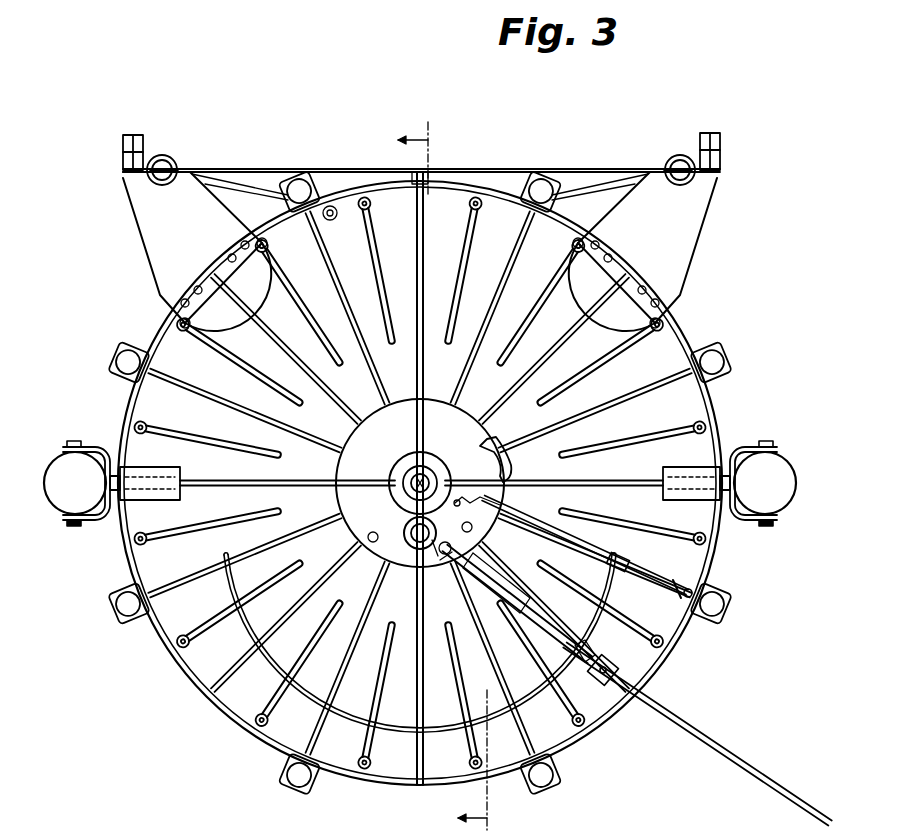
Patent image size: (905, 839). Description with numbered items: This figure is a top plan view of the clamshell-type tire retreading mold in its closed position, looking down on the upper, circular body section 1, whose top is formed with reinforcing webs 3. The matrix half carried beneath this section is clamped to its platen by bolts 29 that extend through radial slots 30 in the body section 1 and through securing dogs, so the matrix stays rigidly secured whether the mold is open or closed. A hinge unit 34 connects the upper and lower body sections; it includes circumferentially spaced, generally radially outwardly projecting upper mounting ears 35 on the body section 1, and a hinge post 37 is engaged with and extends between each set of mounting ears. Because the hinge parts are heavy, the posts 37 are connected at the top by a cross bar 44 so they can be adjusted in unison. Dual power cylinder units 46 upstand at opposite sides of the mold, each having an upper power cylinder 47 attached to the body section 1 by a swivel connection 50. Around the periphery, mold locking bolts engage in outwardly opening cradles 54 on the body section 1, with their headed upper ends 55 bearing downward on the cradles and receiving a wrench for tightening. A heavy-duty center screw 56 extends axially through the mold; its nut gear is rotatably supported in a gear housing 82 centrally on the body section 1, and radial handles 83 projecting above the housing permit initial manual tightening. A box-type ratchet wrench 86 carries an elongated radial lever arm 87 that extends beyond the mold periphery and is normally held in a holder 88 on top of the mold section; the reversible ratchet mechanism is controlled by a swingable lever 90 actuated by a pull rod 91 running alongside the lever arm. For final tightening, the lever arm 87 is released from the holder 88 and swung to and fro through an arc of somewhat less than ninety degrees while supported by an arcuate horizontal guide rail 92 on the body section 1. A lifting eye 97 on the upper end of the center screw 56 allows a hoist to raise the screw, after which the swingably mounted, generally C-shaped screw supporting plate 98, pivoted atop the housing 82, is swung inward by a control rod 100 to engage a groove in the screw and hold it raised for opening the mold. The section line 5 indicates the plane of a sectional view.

The upper circular body section 1 is at (716, 412).
The reinforcing webs 3 is at (315, 440).
The section line 5 is at (444, 470).
The bolts 29 is at (478, 208).
The radial slots 30 is at (457, 298).
The hinge unit 34 is at (180, 150).
The upper mounting ears 35 is at (168, 237).
The hinge post 37 is at (152, 178).
The cross bar 44 is at (268, 166).
The dual power cylinder units 46 is at (58, 522).
The upper power cylinder 47 is at (60, 478).
The swivel connections 50 is at (90, 527).
The cradles 54 is at (722, 336).
The headed upper ends 55 is at (732, 366).
The center screw 56 is at (416, 477).
The gear housing 82 is at (392, 420).
The radial handles 83 is at (428, 368).
The box-type ratchet wrench 86 is at (408, 531).
The lever arm 87 is at (745, 760).
The holder 88 is at (632, 668).
The swingable lever 90 is at (444, 562).
The pull rod 91 is at (550, 642).
The arcuate horizontal guide rail 92 is at (270, 660).
The lifting eye 97 is at (412, 484).
The screw supporting plate 98 is at (485, 445).
The control rod 100 is at (646, 576).